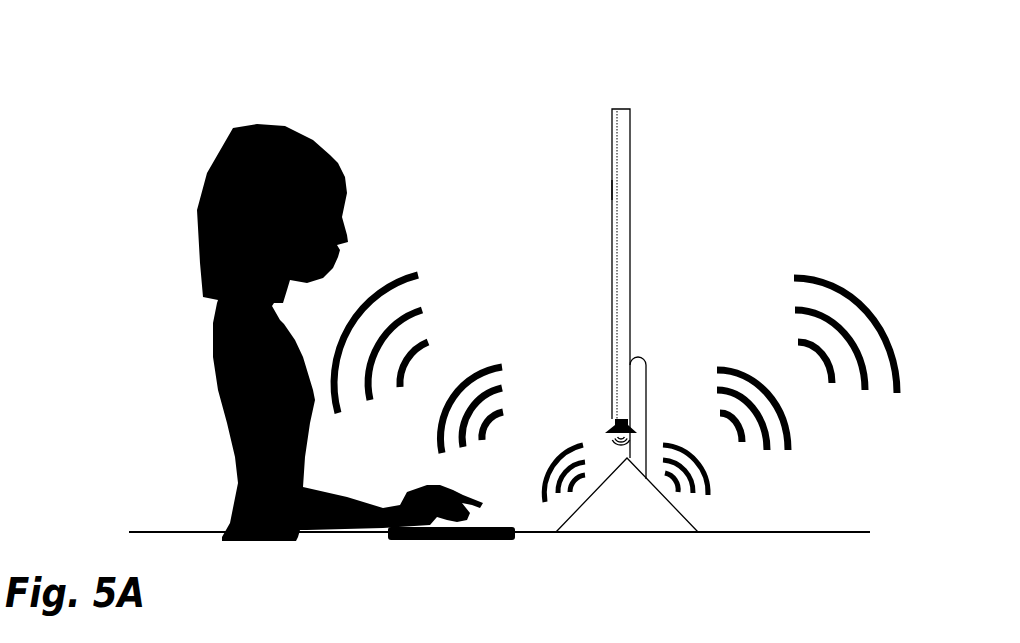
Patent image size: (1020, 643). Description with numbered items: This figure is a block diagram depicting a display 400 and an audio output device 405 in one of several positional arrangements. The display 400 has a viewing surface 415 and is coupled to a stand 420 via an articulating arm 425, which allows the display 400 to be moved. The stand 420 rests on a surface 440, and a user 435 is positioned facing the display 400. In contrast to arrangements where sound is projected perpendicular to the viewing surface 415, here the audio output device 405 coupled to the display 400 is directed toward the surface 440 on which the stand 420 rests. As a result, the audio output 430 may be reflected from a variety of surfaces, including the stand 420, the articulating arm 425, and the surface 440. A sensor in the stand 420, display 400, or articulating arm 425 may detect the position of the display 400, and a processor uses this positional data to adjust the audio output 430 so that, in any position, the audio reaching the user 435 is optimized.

The display 400 is at (622, 120).
The audio output device 405 is at (621, 421).
The viewing surface 415 is at (606, 188).
The stand 420 is at (647, 513).
The articulating arm 425 is at (636, 370).
The audio output 430 is at (444, 333).
The user 435 is at (340, 162).
The surface 440 is at (833, 532).